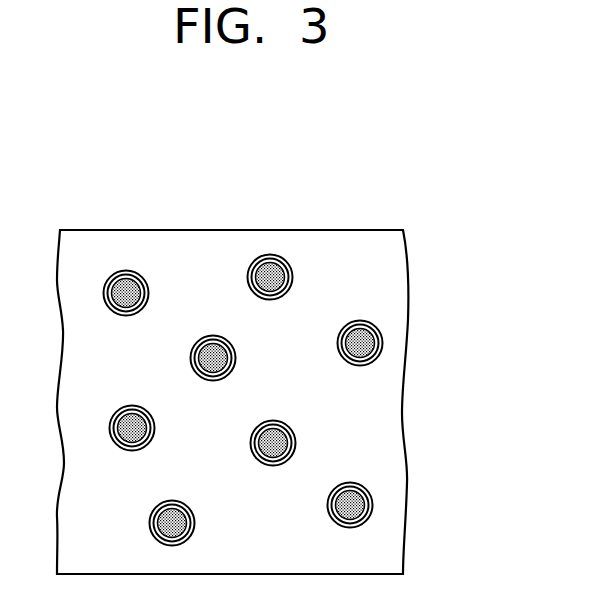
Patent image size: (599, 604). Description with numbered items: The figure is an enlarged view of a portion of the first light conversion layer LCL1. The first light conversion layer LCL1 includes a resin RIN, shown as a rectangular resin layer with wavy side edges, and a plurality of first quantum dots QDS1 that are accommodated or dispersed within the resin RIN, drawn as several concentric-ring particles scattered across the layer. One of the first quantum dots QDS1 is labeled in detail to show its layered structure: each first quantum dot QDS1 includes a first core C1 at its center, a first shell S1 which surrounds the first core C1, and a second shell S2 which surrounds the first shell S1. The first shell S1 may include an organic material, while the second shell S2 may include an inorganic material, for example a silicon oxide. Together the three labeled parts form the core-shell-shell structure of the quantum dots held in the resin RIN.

The first light conversion layer LCL1 is at (301, 355).
The resin RIN is at (392, 432).
The first quantum dots QDS1 is at (325, 400).
The second shell S2 is at (368, 322).
The first shell S1 is at (375, 331).
The first core C1 is at (363, 345).